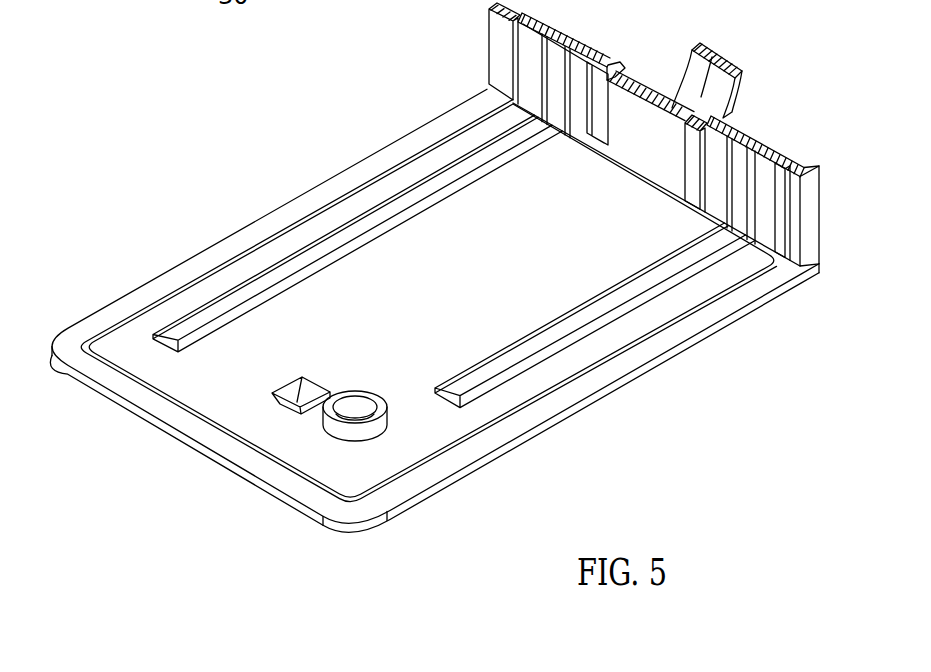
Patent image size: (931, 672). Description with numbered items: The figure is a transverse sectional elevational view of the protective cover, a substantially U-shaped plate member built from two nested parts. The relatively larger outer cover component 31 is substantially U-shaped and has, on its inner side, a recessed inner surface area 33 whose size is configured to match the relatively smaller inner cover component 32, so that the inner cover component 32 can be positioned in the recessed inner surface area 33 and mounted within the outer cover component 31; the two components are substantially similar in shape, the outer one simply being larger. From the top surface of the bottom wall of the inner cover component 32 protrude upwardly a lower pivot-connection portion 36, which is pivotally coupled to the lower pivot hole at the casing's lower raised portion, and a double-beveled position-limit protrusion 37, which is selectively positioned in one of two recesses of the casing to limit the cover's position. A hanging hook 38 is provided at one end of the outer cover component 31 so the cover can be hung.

The outer cover component 31 is at (723, 330).
The inner cover component 32 is at (545, 377).
The recessed inner surface area 33 is at (623, 352).
The lower pivot-connection portion 36 is at (377, 428).
The double-beveled position-limit protrusion 37 is at (300, 385).
The hanging hook 38 is at (740, 82).